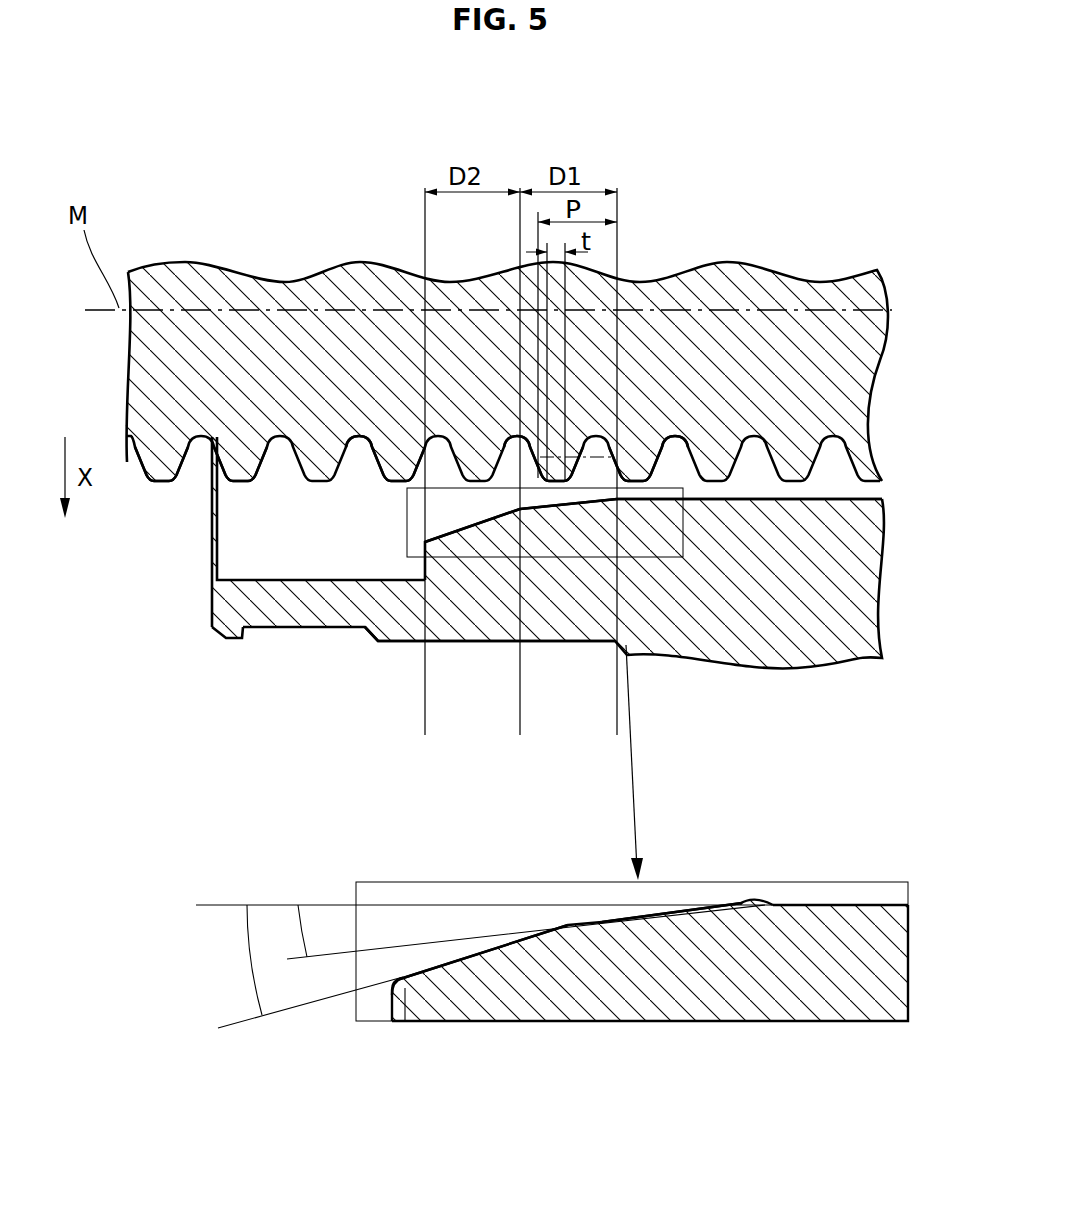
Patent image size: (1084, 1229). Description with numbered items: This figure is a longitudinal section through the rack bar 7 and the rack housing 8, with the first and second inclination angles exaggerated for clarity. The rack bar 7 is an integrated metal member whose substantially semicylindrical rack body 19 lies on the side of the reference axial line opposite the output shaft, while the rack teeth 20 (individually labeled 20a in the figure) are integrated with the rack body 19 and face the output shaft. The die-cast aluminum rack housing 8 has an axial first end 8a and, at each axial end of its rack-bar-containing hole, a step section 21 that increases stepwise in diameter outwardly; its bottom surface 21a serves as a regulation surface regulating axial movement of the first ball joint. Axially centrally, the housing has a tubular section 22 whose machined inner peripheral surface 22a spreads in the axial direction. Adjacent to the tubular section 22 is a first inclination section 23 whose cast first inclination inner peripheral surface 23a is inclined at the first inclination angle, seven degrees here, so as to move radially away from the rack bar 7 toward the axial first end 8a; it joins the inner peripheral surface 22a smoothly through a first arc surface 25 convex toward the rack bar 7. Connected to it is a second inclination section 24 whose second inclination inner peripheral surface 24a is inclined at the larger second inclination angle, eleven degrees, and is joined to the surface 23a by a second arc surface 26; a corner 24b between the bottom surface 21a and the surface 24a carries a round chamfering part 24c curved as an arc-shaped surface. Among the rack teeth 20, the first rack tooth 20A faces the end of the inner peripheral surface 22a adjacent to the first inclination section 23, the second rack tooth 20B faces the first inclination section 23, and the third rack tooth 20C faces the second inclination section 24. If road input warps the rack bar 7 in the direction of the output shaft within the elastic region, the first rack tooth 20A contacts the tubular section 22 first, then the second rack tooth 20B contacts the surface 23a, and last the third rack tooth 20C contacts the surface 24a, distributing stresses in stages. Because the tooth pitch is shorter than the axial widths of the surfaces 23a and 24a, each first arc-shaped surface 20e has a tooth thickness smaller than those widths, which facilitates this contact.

The rack bar 7 is at (464, 309).
The rack housing 8 is at (516, 770).
The axial first end 8a is at (212, 627).
The rack body 19 is at (173, 338).
The rack teeth 20 is at (322, 478).
The thread ridge 20a is at (201, 464).
The first rack tooth 20A is at (650, 477).
The second rack tooth 20B is at (634, 465).
The third rack tooth 20C is at (424, 480).
The first arc-shaped surface 20e is at (412, 477).
The step section 21 is at (212, 580).
The bottom surface 21a is at (378, 641).
The tubular section 22 is at (617, 709).
The inner peripheral surface 22a is at (848, 499).
The first inclination section 23 is at (617, 709).
The first inclination inner peripheral surface 23a is at (557, 505).
The second inclination section 24 is at (520, 709).
The second inclination inner peripheral surface 24a is at (478, 530).
The corner 24b is at (403, 1021).
The round chamfering part 24c is at (393, 988).
The first arc surface 25 is at (758, 899).
The second arc surface 26 is at (576, 923).